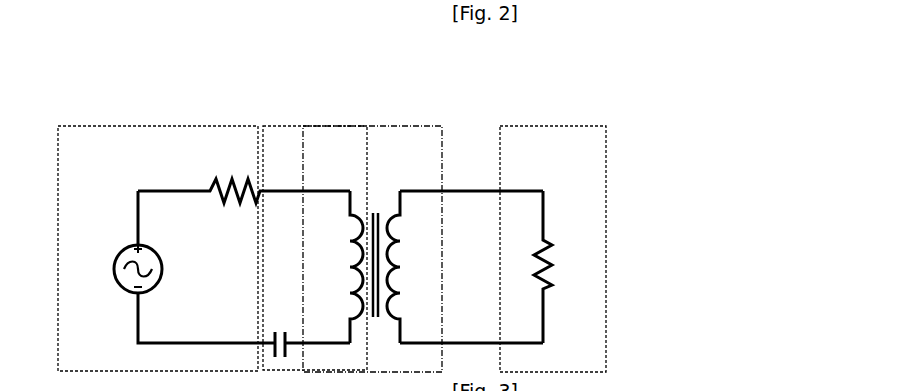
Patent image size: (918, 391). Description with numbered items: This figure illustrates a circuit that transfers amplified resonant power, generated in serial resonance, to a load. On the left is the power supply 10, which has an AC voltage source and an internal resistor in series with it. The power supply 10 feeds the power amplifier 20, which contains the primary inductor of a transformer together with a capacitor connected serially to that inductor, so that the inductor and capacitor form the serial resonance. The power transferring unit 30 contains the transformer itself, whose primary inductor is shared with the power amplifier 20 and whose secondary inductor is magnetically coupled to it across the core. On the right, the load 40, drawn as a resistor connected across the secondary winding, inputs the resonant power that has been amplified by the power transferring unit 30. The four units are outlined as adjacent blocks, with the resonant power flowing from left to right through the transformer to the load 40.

The power supply 10 is at (156, 127).
The power amplifier 20 is at (289, 127).
The power transferring unit 30 is at (402, 127).
The load 40 is at (557, 127).